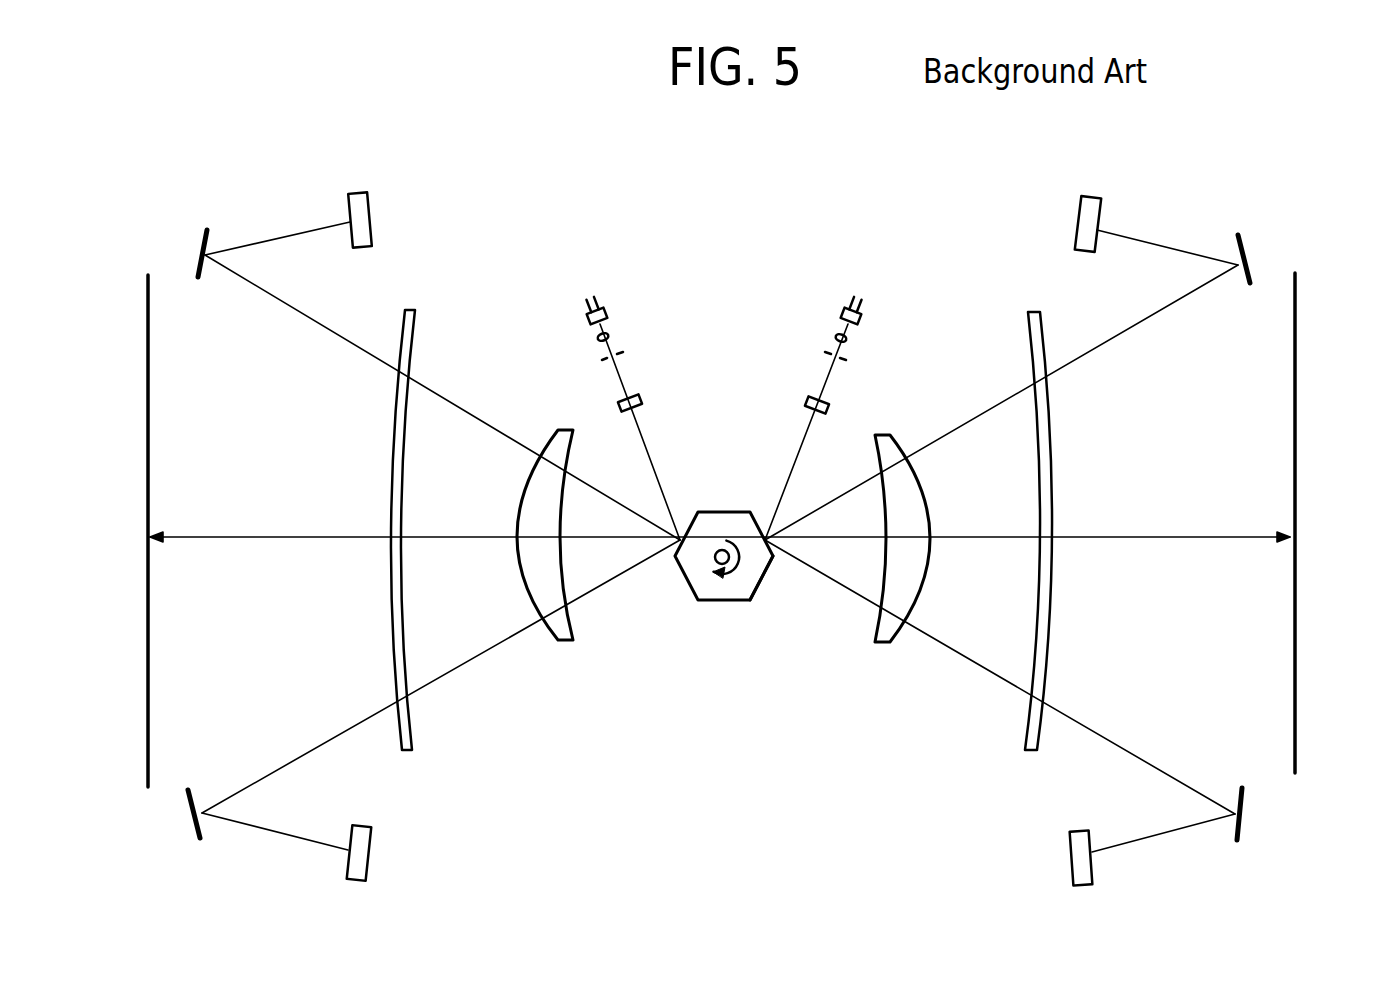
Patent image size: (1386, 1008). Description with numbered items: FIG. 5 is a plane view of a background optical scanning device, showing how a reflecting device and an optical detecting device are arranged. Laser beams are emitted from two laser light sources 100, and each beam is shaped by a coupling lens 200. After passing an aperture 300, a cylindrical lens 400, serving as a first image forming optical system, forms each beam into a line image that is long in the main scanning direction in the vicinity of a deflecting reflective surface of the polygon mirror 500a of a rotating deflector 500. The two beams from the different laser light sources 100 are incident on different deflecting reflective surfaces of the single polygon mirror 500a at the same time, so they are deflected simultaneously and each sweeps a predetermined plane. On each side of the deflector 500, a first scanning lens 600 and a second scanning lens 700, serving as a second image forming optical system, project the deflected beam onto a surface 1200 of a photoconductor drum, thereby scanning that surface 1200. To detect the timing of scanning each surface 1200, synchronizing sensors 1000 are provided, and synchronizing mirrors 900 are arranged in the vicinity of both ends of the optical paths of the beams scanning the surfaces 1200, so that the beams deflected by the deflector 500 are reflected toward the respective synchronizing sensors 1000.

The laser light source 100 is at (607, 315).
The coupling lens 200 is at (610, 335).
The aperture 300 is at (623, 352).
The cylindrical lens 400 is at (636, 406).
The rotating deflector 500 is at (689, 613).
The polygon mirror 500a is at (757, 588).
The first scanning lens 600 is at (540, 578).
The second scanning lens 700 is at (397, 622).
The synchronizing mirror 900 is at (203, 240).
The synchronizing sensor 1000 is at (357, 198).
The surface of photoconductor drum 1200 is at (150, 420).